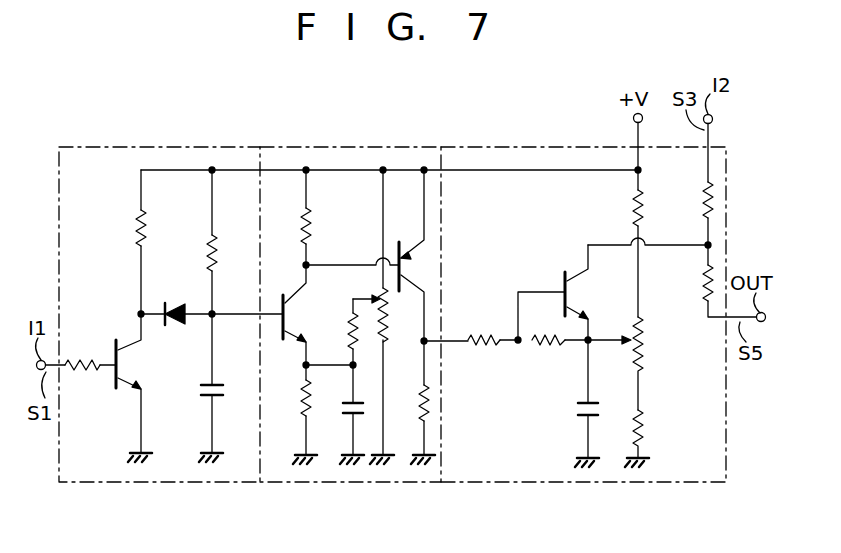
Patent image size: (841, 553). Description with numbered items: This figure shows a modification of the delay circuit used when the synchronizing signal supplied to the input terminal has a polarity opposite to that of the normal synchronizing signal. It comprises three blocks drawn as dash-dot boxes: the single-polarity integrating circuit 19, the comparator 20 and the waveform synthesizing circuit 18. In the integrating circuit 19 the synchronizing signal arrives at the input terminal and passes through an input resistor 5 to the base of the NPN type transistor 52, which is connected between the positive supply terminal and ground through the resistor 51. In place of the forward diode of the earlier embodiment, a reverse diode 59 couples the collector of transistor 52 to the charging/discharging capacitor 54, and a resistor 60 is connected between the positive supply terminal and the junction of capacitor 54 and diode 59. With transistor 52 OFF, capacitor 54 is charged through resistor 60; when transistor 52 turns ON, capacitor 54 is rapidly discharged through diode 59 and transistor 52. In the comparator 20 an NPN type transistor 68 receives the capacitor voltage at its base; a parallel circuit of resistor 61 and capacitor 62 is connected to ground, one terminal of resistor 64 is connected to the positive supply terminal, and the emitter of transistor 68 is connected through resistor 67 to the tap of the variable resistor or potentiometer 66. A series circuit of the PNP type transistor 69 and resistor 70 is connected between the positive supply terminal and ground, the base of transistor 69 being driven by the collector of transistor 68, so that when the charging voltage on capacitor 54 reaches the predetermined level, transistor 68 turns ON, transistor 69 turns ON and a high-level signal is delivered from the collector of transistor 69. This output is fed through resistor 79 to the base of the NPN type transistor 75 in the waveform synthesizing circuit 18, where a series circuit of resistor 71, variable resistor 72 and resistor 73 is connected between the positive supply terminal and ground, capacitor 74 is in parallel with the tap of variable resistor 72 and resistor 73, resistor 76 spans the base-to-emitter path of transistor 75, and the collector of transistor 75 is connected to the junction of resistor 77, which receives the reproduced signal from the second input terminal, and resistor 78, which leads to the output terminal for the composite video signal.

The input resistor 5 is at (86, 342).
The waveform synthesizing circuit 18 is at (512, 147).
The single-polarity integrating circuit 19 is at (229, 147).
The comparator 20 is at (360, 147).
The resistor 51 is at (136, 230).
The NPN type transistor 52 is at (126, 372).
The charging/discharging capacitor 54 is at (221, 396).
The diode 59 is at (176, 306).
The resistor 60 is at (207, 255).
The resistor 61 is at (298, 402).
The capacitor 62 is at (348, 404).
The resistor 64 is at (314, 224).
The variable resistor or potentiometer 66 is at (390, 313).
The resistor 67 is at (349, 334).
The NPN type transistor 68 is at (294, 309).
The PNP type transistor 69 is at (406, 268).
The resistor 70 is at (418, 402).
The resistor 71 is at (630, 210).
The variable resistor 72 is at (646, 347).
The resistor 73 is at (646, 424).
The capacitor 74 is at (574, 410).
The NPN type transistor 75 is at (574, 300).
The resistor 76 is at (546, 348).
The resistor 77 is at (700, 206).
The resistor 78 is at (700, 280).
The resistor 79 is at (472, 336).